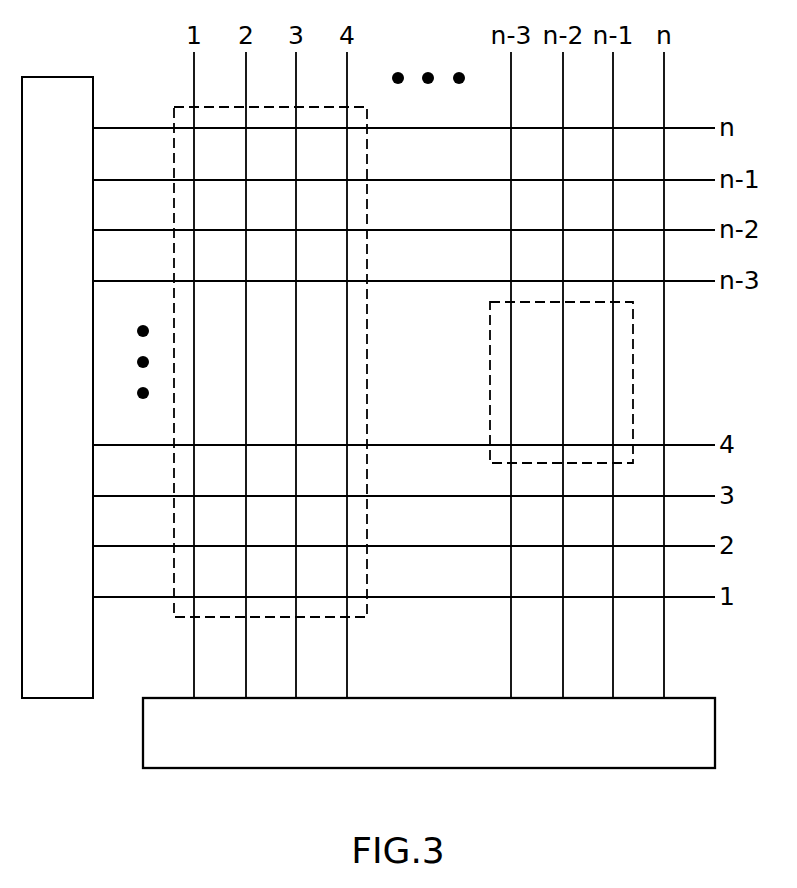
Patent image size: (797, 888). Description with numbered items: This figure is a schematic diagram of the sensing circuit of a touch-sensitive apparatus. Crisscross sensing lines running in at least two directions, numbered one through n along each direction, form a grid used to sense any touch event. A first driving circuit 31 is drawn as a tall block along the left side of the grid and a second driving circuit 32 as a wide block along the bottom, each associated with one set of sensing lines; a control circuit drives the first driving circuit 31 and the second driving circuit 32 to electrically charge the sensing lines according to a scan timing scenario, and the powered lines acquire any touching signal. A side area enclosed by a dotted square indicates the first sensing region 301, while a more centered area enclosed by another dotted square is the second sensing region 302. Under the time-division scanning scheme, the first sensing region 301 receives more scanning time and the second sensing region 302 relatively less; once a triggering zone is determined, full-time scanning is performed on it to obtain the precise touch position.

The first driving circuit 31 is at (57, 86).
The second driving circuit 32 is at (148, 737).
The first sensing region 301 is at (368, 323).
The second sensing region 302 is at (490, 400).